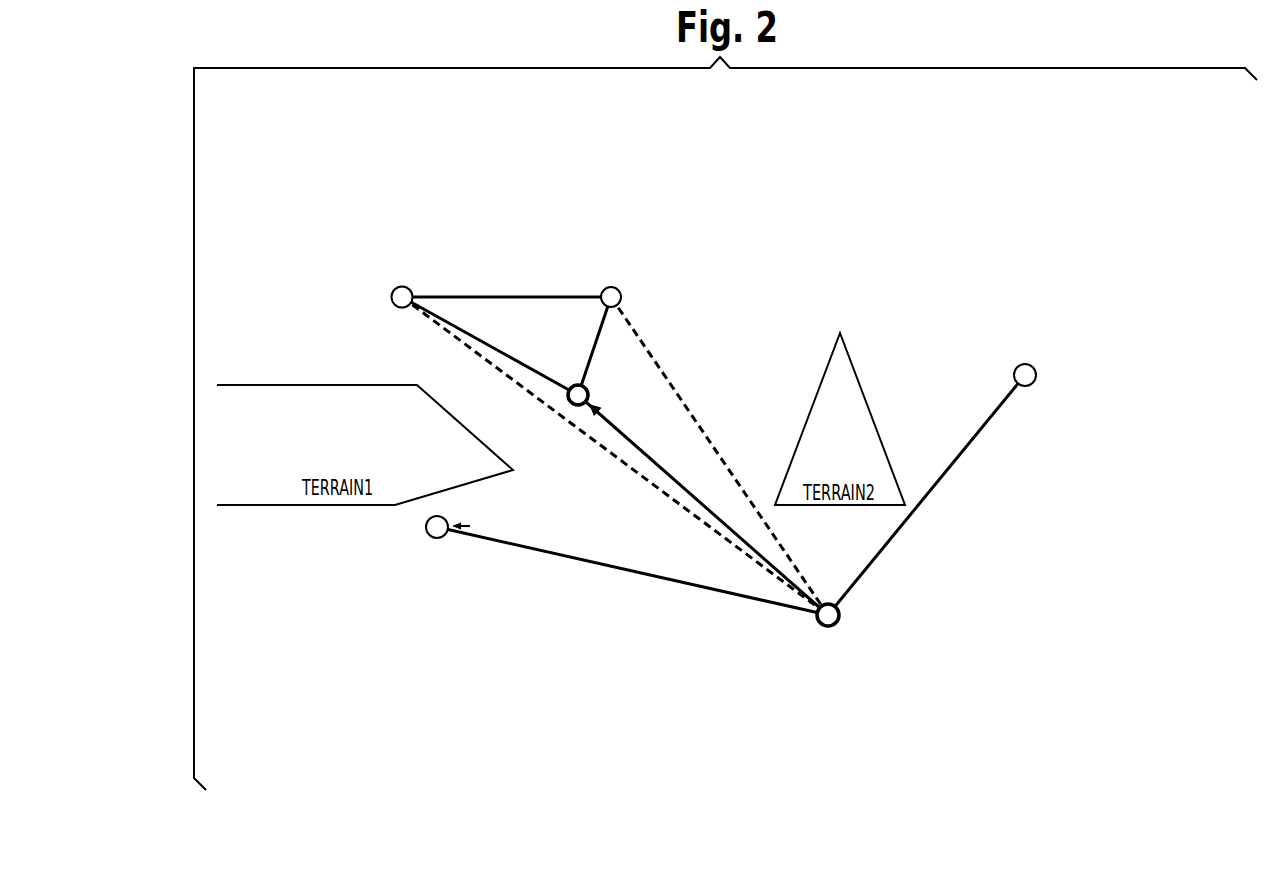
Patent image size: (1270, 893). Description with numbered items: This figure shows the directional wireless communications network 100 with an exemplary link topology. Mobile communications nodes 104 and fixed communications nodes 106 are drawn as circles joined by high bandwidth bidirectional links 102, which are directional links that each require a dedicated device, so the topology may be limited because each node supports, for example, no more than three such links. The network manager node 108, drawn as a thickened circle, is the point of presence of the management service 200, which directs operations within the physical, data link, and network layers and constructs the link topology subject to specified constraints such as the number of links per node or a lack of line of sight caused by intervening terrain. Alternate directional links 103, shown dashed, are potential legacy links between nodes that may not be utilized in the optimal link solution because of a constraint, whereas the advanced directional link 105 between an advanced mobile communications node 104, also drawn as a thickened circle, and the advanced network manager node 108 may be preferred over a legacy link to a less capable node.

The directional wireless communications network 100 is at (752, 118).
The bidirectional link 102 is at (515, 295).
The alternate directional link 103 is at (705, 430).
The mobile communications node 104 is at (607, 287).
The advanced directional link 105 is at (612, 423).
The fixed communications node 106 is at (393, 292).
The network manager node 108 is at (864, 634).
The management service 200 is at (832, 626).